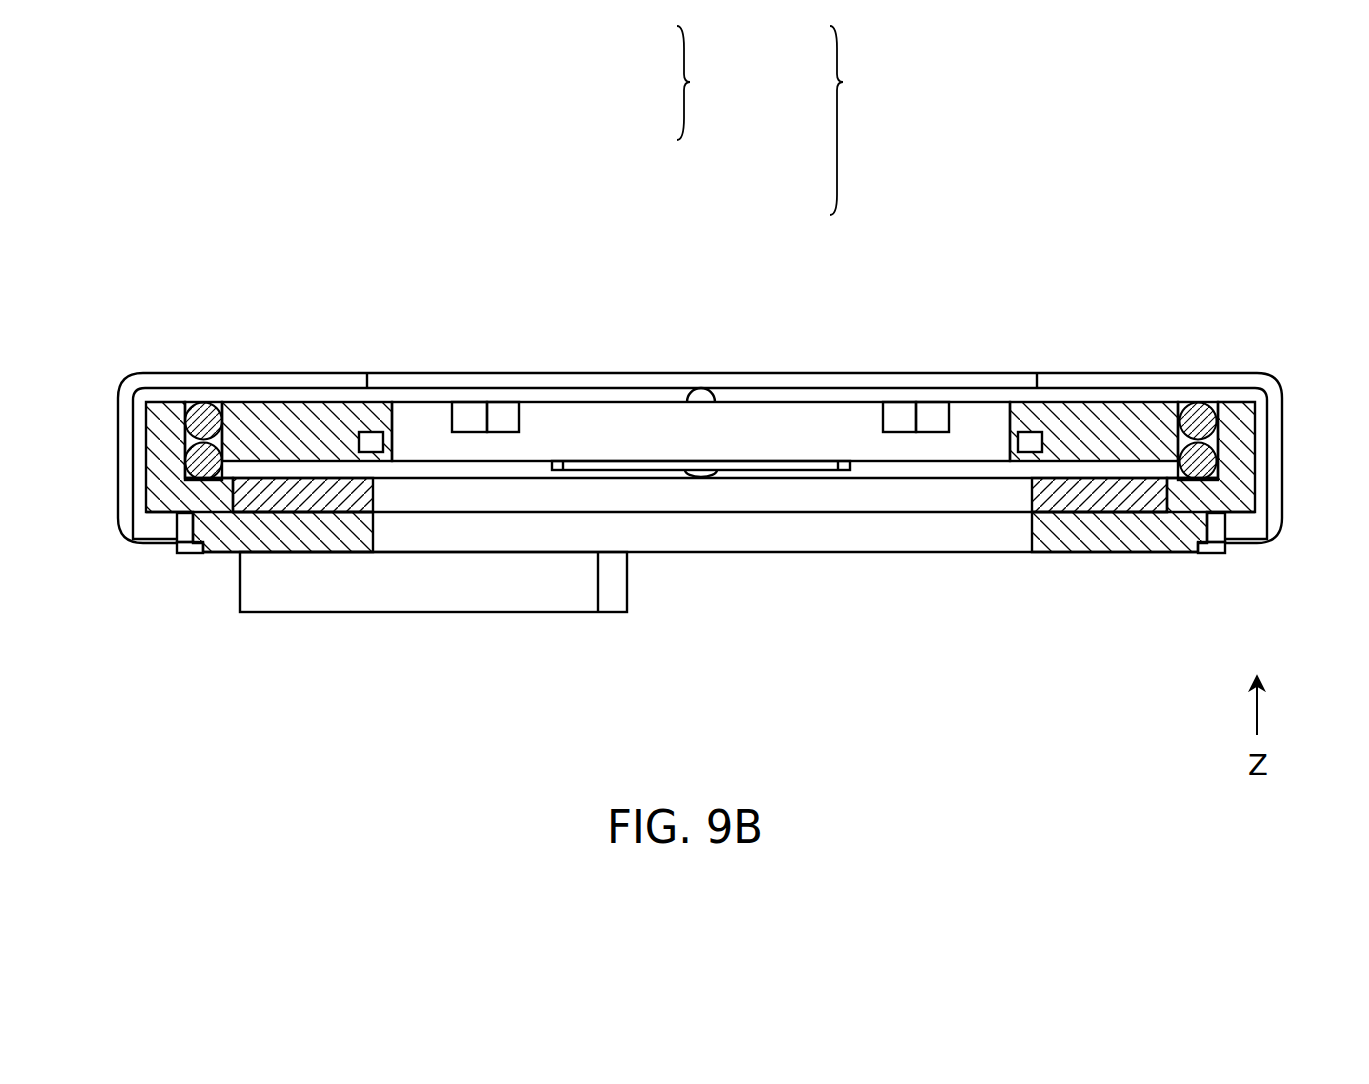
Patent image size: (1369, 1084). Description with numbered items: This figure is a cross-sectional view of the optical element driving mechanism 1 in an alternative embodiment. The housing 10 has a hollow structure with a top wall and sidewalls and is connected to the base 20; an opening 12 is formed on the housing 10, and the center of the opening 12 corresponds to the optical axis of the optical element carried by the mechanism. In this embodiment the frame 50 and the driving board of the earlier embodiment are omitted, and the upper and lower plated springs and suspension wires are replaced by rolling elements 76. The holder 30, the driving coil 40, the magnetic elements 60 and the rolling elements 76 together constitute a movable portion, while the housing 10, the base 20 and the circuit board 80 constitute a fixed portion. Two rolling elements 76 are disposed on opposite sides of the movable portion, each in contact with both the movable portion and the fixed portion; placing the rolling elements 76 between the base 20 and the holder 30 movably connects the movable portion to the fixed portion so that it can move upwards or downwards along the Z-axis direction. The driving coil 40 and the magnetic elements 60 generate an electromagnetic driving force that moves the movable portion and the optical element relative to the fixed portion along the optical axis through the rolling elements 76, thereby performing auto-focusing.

The optical element driving mechanism 1 is at (94, 308).
The housing 10 is at (290, 383).
The opening 12 is at (414, 386).
The base 20 is at (165, 495).
The holder 30 is at (565, 425).
The driving coil 40 is at (374, 431).
The frame 50 is at (1110, 427).
The magnetic element 60 is at (811, 155).
The rolling element 76 is at (183, 417).
The circuit board 80 is at (1097, 497).